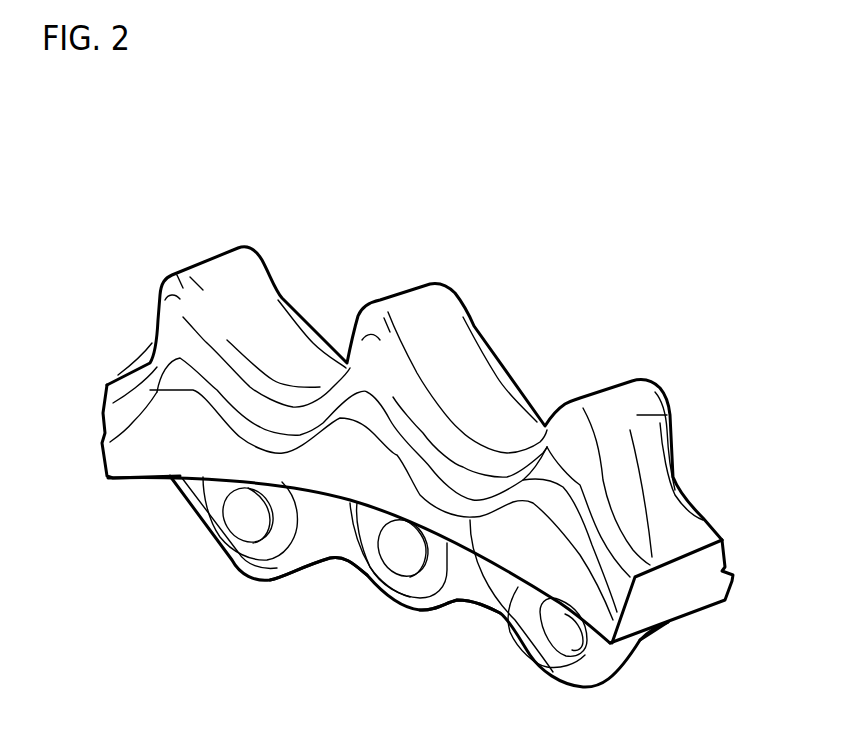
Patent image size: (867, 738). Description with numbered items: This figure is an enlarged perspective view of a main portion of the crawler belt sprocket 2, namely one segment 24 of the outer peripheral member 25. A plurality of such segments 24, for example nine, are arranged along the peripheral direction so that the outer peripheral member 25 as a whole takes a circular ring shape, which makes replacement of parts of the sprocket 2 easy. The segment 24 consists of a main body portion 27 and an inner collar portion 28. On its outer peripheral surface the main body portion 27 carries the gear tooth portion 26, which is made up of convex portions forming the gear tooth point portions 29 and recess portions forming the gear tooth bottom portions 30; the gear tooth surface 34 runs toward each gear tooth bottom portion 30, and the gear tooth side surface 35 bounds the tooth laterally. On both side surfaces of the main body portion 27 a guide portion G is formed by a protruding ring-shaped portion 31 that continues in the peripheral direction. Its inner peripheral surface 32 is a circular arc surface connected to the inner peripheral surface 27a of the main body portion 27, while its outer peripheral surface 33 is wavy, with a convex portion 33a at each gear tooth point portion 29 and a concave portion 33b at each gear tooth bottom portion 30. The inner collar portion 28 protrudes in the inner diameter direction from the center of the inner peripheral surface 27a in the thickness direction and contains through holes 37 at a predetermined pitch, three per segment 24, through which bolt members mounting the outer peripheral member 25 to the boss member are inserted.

The sprocket 2 is at (583, 361).
The segment 24 is at (373, 290).
The outer peripheral member 25 is at (662, 392).
The gear tooth portion 26 is at (208, 268).
The main body portion 27 is at (705, 508).
The inner peripheral surface 27a is at (641, 642).
The inner collar portion 28 is at (298, 578).
The gear tooth point portion 29 is at (173, 273).
The gear tooth bottom portion 30 is at (315, 365).
The protruding ring-shaped portion 31 is at (487, 550).
The inner peripheral surface 32 is at (350, 553).
The outer peripheral surface 33 is at (437, 484).
The convex portion 33a is at (540, 477).
The concave portion 33b is at (273, 440).
The gear tooth surface 34 is at (242, 290).
The gear tooth side surface 35 is at (172, 343).
The through hole 37 is at (250, 537).
The guide portion G is at (159, 447).